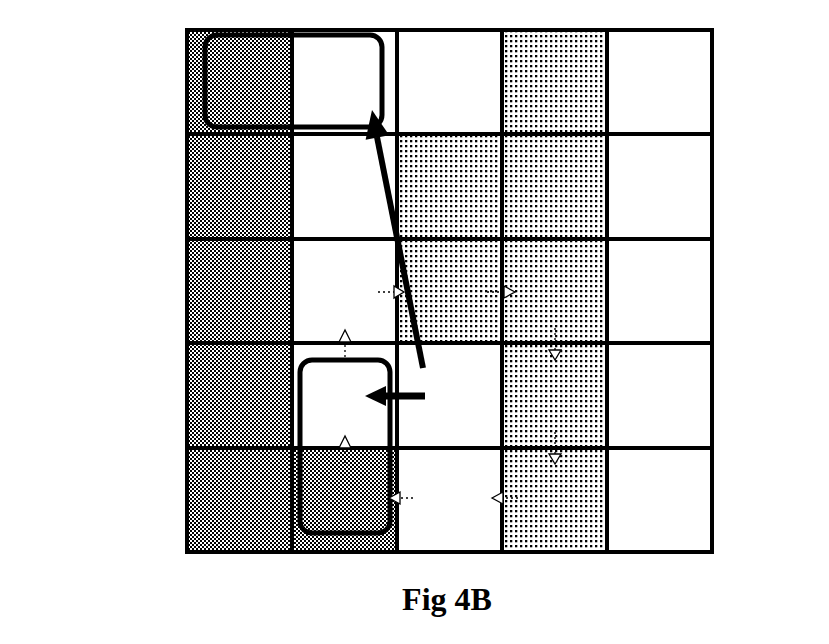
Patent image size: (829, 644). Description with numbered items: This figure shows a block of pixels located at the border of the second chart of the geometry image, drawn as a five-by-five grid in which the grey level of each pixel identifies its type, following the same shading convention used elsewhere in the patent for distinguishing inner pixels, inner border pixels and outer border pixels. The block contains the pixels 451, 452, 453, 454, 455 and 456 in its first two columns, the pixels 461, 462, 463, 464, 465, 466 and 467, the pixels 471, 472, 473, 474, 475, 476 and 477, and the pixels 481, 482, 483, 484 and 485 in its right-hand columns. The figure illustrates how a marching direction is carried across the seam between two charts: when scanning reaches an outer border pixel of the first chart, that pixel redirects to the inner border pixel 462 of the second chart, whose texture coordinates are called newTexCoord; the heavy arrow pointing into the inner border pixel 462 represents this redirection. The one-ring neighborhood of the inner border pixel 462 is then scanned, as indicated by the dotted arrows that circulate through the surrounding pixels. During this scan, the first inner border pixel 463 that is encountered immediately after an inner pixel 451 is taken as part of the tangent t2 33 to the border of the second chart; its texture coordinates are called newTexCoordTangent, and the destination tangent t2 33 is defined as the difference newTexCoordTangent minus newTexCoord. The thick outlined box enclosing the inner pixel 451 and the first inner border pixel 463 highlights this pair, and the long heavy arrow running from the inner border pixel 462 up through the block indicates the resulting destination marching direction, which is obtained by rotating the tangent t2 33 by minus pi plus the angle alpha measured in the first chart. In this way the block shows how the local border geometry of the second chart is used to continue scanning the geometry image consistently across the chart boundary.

The tangent vector t2 33 is at (387, 205).
The inner pixel 451 is at (344, 500).
The pixel 452 is at (239, 500).
The pixel 453 is at (239, 395).
The pixel 454 is at (239, 291).
The pixel 455 is at (239, 186).
The pixel 456 is at (239, 82).
The pixel 461 is at (449, 500).
The inner border pixel 462 is at (449, 395).
The first inner border pixel 463 is at (344, 395).
The pixel 464 is at (344, 291).
The pixel 465 is at (344, 186).
The pixel 466 is at (344, 82).
The pixel 467 is at (449, 82).
The pixel 471 is at (554, 500).
The pixel 472 is at (554, 395).
The pixel 473 is at (554, 291).
The pixel 474 is at (449, 291).
The pixel 475 is at (449, 186).
The pixel 476 is at (554, 186).
The pixel 477 is at (554, 82).
The pixel 481 is at (659, 500).
The pixel 482 is at (659, 395).
The pixel 483 is at (659, 291).
The pixel 484 is at (659, 186).
The pixel 485 is at (659, 82).